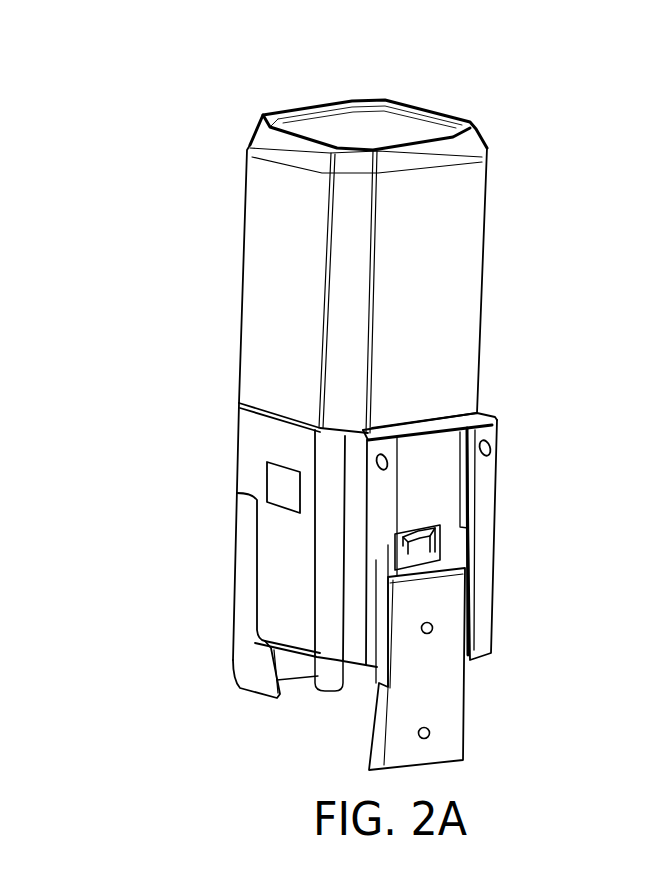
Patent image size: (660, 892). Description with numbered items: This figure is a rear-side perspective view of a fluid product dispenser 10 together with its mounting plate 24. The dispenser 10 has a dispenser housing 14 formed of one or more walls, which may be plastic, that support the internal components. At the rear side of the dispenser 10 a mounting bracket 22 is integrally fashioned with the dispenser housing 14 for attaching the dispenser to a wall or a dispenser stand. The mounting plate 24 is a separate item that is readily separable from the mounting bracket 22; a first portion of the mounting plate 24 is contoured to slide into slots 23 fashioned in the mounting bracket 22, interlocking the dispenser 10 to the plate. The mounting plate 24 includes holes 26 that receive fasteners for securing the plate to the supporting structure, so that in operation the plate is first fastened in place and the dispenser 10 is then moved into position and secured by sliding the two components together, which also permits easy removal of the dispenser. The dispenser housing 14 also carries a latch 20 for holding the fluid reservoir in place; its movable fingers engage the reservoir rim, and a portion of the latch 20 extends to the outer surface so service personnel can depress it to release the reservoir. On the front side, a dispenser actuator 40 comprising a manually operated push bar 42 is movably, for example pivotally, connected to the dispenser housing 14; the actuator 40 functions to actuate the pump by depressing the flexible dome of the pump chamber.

The product dispenser 10 is at (501, 198).
The dispenser housing 14 is at (253, 442).
The latch 20 is at (273, 490).
The mounting bracket 22 is at (487, 472).
The slots 23 is at (475, 525).
The mounting plate 24 is at (453, 668).
The holes 26 is at (433, 628).
The dispenser actuator 40 is at (243, 628).
The push bar 42 is at (240, 570).